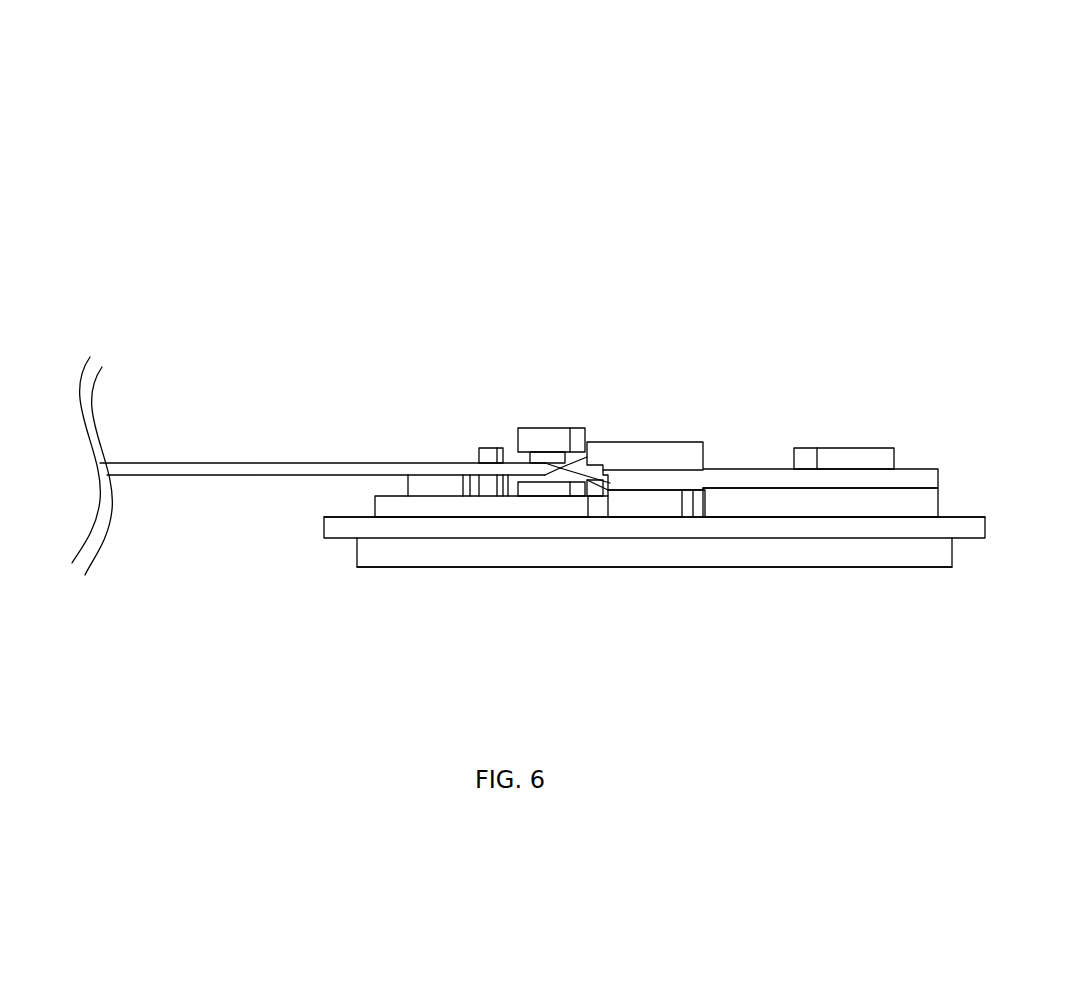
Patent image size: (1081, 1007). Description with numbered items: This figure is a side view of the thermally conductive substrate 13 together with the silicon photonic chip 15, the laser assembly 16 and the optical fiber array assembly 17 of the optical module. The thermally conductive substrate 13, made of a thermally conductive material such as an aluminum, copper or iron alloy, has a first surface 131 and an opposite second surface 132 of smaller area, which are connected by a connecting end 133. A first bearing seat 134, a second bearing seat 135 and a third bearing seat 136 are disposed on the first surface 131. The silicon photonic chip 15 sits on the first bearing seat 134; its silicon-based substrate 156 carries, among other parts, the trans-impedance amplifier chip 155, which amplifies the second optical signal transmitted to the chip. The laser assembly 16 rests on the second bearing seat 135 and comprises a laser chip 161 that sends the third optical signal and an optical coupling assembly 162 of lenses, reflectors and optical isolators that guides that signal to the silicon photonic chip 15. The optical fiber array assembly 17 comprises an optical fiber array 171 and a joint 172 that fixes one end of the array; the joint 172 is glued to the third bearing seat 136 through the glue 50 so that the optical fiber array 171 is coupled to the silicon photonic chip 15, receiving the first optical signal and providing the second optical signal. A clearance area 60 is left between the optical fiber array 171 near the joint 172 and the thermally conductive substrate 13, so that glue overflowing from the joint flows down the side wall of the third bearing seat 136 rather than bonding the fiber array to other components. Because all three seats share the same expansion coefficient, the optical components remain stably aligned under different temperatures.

The thermally conductive substrate 13 is at (676, 498).
The first surface 131 is at (957, 515).
The second surface 132 is at (880, 567).
The connecting end 133 is at (952, 552).
The first bearing seat 134 is at (773, 503).
The second bearing seat 135 is at (388, 505).
The third bearing seat 136 is at (653, 502).
The silicon photonic chip 15 is at (762, 384).
The trans-impedance amplifier chip 155 is at (836, 458).
The silicon-based substrate 156 is at (742, 477).
The laser assembly 16 is at (502, 367).
The laser chip 161 is at (429, 485).
The optical coupling assembly 162 is at (557, 388).
The optical fiber array assembly 17 is at (421, 299).
The optical fiber array 171 is at (242, 467).
The joint 172 is at (644, 389).
The glue 50 is at (667, 488).
The clearance area 60 is at (590, 497).